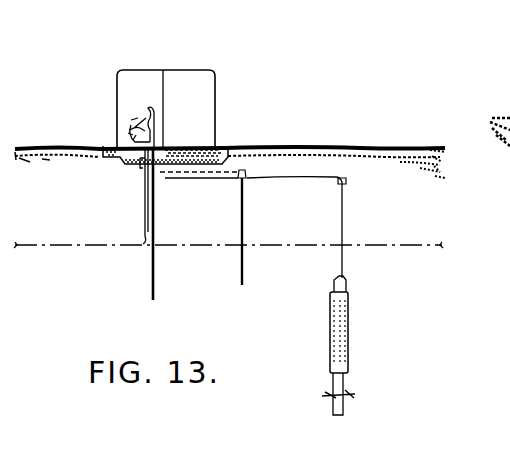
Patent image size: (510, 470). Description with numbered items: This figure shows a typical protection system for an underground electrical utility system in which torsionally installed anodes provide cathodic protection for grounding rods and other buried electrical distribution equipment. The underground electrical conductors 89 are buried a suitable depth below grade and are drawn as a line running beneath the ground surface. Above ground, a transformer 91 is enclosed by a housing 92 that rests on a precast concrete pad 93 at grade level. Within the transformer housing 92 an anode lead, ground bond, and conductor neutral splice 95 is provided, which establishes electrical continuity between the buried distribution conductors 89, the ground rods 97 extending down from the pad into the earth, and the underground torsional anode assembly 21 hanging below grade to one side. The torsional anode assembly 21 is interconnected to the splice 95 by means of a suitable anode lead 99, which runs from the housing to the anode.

The underground torsional anode assembly 21 is at (350, 312).
The underground electrical conductors 89 is at (118, 244).
The transformer 91 is at (220, 76).
The housing 92 is at (181, 88).
The precast concrete pad 93 is at (223, 145).
The anode lead, ground bond, and conductor neutral splice 95 is at (133, 125).
The ground rods 97 is at (152, 286).
The anode lead 99 is at (343, 199).